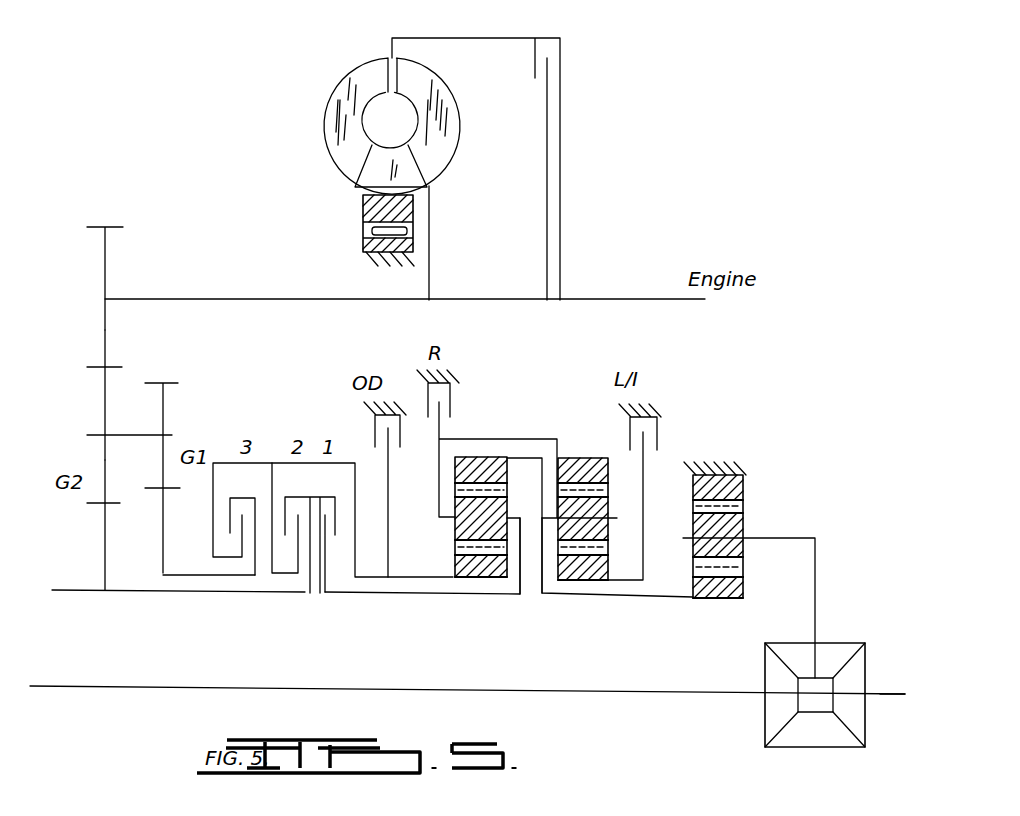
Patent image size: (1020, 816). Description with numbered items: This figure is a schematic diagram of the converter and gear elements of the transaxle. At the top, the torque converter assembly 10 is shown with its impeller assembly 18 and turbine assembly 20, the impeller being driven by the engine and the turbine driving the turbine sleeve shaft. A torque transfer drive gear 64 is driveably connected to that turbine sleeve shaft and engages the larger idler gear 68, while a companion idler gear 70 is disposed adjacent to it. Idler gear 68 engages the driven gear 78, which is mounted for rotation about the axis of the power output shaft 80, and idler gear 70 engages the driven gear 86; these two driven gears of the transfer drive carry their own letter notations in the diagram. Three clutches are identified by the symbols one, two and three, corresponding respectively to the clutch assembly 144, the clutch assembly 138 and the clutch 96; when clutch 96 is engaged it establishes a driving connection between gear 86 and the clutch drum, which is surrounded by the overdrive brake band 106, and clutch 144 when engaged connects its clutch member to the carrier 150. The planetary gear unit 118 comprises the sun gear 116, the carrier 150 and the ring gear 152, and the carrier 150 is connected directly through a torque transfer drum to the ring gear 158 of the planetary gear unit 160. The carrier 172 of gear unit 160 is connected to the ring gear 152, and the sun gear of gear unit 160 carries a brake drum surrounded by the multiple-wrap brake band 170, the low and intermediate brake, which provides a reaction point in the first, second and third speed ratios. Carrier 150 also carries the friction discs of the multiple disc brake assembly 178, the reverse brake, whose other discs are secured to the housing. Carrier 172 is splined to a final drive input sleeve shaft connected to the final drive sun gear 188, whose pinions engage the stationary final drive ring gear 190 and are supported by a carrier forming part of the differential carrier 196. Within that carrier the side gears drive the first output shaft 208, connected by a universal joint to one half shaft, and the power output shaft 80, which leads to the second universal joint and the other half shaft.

The torque converter assembly 10 is at (457, 101).
The impeller assembly 18 is at (331, 112).
The turbine assembly 20 is at (448, 148).
The torque transfer drive gear 64 is at (107, 255).
The idler gear 68 is at (105, 395).
The idler gear 70 is at (165, 415).
The driven gear 78 is at (103, 540).
The driven gear 86 is at (160, 555).
The clutch 96 is at (246, 560).
The clutch assembly 138 is at (300, 582).
The clutch assembly 144 is at (336, 546).
The overdrive brake band 106 is at (370, 430).
The multiple disc brake assembly 178 is at (454, 410).
The ring gear 152 is at (455, 470).
The planetary gear unit 118 is at (488, 468).
The carrier 172 is at (548, 517).
The ring gear 158 is at (608, 462).
The multiple-wrap brake band 170 is at (662, 430).
The sun gear 116 is at (483, 573).
The carrier 150 is at (525, 580).
The planetary gear unit 160 is at (587, 560).
The final drive ring gear 190 is at (740, 490).
The final drive sun gear 188 is at (718, 598).
The differential carrier 196 is at (817, 643).
The first output shaft 208 is at (905, 694).
The power output shaft 80 is at (660, 692).